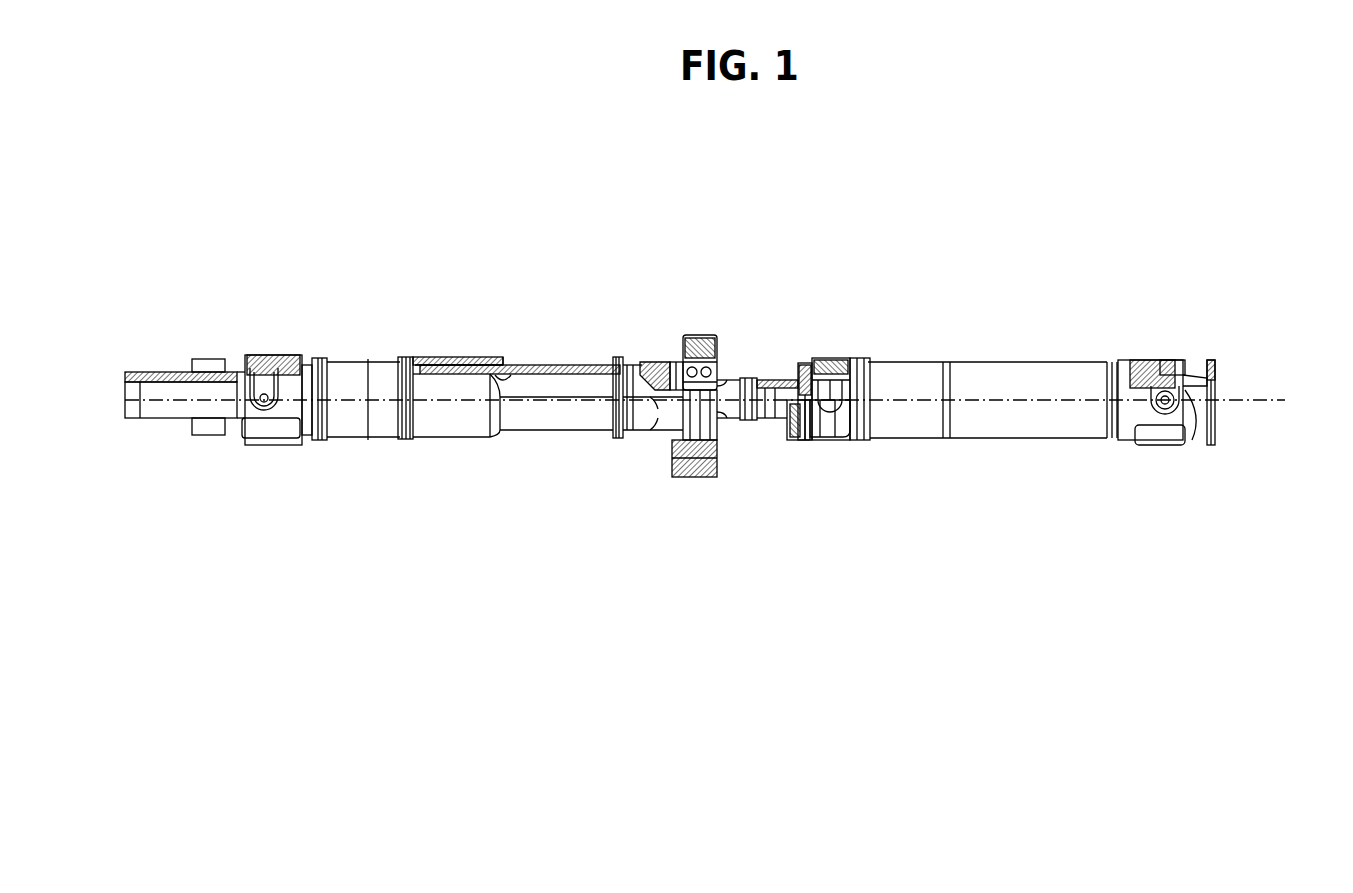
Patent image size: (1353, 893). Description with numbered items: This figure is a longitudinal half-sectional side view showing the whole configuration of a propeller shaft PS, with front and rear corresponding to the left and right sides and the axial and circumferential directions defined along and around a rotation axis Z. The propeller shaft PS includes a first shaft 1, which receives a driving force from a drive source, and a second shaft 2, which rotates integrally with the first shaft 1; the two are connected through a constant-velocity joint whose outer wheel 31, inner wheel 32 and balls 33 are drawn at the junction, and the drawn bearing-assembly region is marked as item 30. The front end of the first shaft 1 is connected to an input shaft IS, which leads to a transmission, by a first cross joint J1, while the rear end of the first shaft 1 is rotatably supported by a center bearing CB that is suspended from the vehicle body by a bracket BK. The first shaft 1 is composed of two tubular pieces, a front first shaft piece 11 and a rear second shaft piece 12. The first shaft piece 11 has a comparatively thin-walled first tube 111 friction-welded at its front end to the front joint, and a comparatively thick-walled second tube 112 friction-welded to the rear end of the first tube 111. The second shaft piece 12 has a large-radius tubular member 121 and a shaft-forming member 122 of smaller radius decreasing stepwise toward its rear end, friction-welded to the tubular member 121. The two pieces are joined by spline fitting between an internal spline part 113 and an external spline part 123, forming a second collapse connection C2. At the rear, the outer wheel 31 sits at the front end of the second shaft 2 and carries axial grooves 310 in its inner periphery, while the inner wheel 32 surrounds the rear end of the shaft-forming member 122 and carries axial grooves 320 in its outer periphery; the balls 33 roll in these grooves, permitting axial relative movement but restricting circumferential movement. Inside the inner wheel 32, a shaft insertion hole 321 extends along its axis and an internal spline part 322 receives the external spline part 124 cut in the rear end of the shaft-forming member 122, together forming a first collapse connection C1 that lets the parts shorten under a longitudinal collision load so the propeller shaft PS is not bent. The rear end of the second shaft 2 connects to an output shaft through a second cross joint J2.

The first shaft 1 is at (483, 469).
The second shaft 2 is at (978, 420).
The first shaft piece 11 is at (473, 326).
The second shaft piece 12 is at (627, 325).
The bearing assembly 30 is at (814, 333).
The outer wheel 31 is at (845, 354).
The inner wheel 32 is at (787, 354).
The balls 33 is at (822, 354).
The first tube 111 is at (370, 349).
The second tube 112 is at (508, 347).
The internal spline part 113 is at (526, 319).
The tubular member 121 is at (627, 348).
The shaft-forming member 122 is at (650, 324).
The external spline part 123 is at (463, 311).
The external spline part 124 is at (819, 461).
The axial grooves 310 is at (988, 365).
The axial grooves 320 is at (895, 429).
The shaft insertion hole 321 is at (751, 507).
The internal spline part 322 is at (773, 439).
The input shaft IS is at (184, 356).
The first joint J1 is at (271, 345).
The second joint J2 is at (1170, 363).
The center bearing CB is at (688, 309).
The bracket BK is at (699, 357).
The propeller shaft PS is at (1168, 260).
The rotation axis Z is at (1228, 377).
The first collapse connection C1 is at (786, 476).
The second collapse connection C2 is at (487, 296).